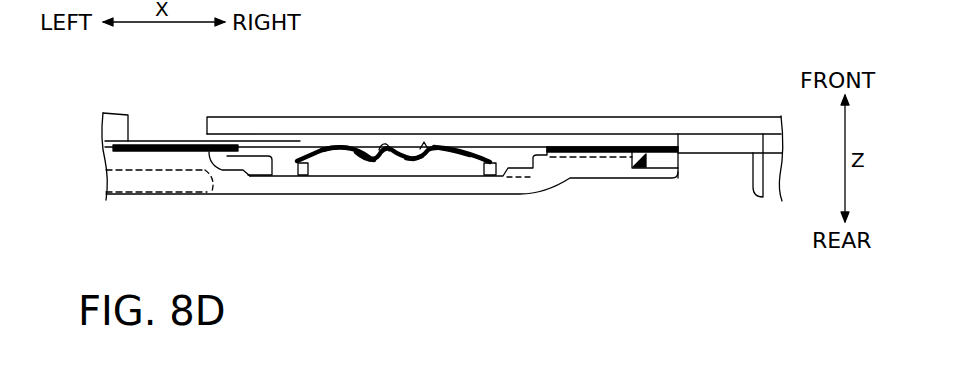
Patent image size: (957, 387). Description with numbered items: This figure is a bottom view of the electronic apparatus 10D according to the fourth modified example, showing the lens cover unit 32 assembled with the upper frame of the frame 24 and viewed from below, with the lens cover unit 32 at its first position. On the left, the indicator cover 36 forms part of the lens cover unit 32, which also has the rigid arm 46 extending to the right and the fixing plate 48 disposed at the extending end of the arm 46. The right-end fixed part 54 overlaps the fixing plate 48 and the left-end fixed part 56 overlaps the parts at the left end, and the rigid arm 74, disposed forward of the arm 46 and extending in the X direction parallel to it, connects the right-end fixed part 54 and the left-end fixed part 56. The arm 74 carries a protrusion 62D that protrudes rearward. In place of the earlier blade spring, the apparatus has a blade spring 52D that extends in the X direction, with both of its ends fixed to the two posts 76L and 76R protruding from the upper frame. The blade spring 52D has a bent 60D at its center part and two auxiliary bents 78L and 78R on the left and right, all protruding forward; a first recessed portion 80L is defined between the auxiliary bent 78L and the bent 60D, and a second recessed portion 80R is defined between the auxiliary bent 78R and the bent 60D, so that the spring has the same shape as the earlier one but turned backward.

The electronic apparatus 10D is at (737, 33).
The frame 24 is at (593, 120).
The right-end fixed part 54 is at (660, 136).
The left-end fixed part 56 is at (152, 140).
The arm 74 is at (254, 143).
The indicator cover 36 is at (187, 153).
The lens cover unit 32 is at (148, 160).
The arm 46 is at (278, 178).
The fixing plate 48 is at (663, 162).
The blade spring 52D is at (320, 147).
The protrusion 62D is at (382, 146).
The bent 60D is at (395, 151).
The first recessed portion 80L is at (364, 158).
The second recessed portion 80R is at (419, 158).
The auxiliary bent 78R is at (352, 152).
The auxiliary bent 78L is at (447, 151).
The post 76L is at (302, 174).
The post 76R is at (491, 173).